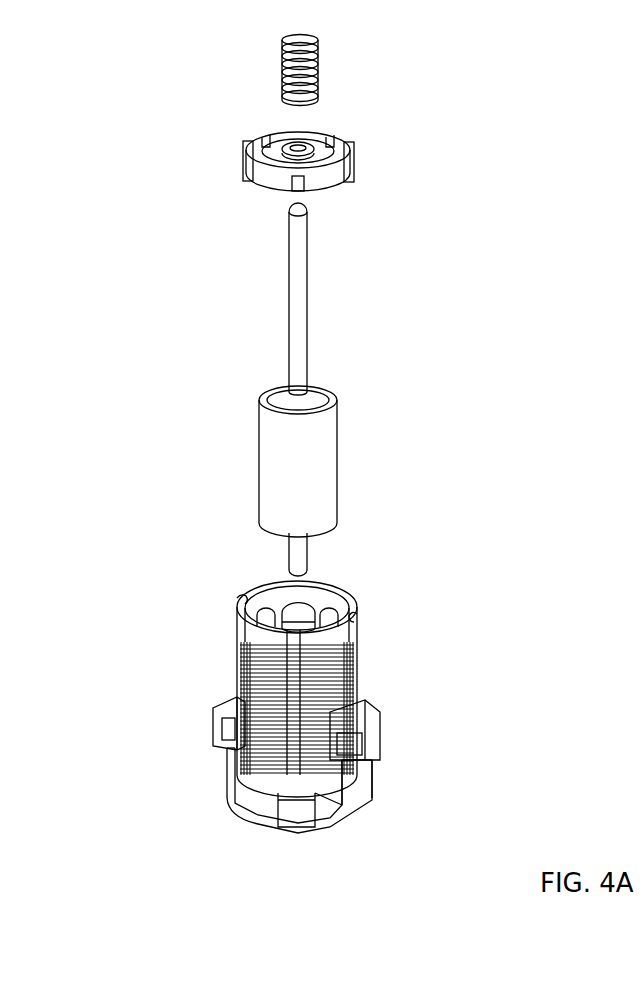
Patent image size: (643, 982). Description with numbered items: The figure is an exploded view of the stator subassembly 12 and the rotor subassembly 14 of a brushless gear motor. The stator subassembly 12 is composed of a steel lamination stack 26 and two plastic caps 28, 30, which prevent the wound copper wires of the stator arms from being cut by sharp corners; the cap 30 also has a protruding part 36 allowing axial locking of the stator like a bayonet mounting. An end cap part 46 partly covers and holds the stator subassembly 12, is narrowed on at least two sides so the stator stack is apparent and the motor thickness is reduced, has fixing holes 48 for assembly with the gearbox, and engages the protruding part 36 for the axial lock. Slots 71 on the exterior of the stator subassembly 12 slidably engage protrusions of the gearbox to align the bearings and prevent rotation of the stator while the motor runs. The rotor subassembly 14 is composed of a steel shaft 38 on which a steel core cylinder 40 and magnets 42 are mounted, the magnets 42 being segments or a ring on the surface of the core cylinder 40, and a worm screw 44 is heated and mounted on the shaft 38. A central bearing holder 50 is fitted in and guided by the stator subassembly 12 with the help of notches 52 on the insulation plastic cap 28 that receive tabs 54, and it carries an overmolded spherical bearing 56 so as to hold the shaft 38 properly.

The stator subassembly 12 is at (443, 610).
The rotor subassembly 14 is at (333, 358).
The steel lamination stack 26 is at (358, 662).
The plastic cap 28 is at (318, 659).
The plastic cap 30 is at (257, 716).
The protruding part 36 is at (353, 808).
The steel shaft 38 is at (298, 295).
The steel core cylinder 40 is at (278, 395).
The magnets 42 is at (265, 447).
The worm screw 44 is at (281, 51).
The end cap part 46 is at (358, 775).
The fixing holes 48 is at (366, 717).
The central bearing holder 50 is at (300, 164).
The notches 52 is at (350, 623).
The tabs 54 is at (247, 142).
The spherical bearing 56 is at (335, 145).
The slots 71 is at (237, 668).